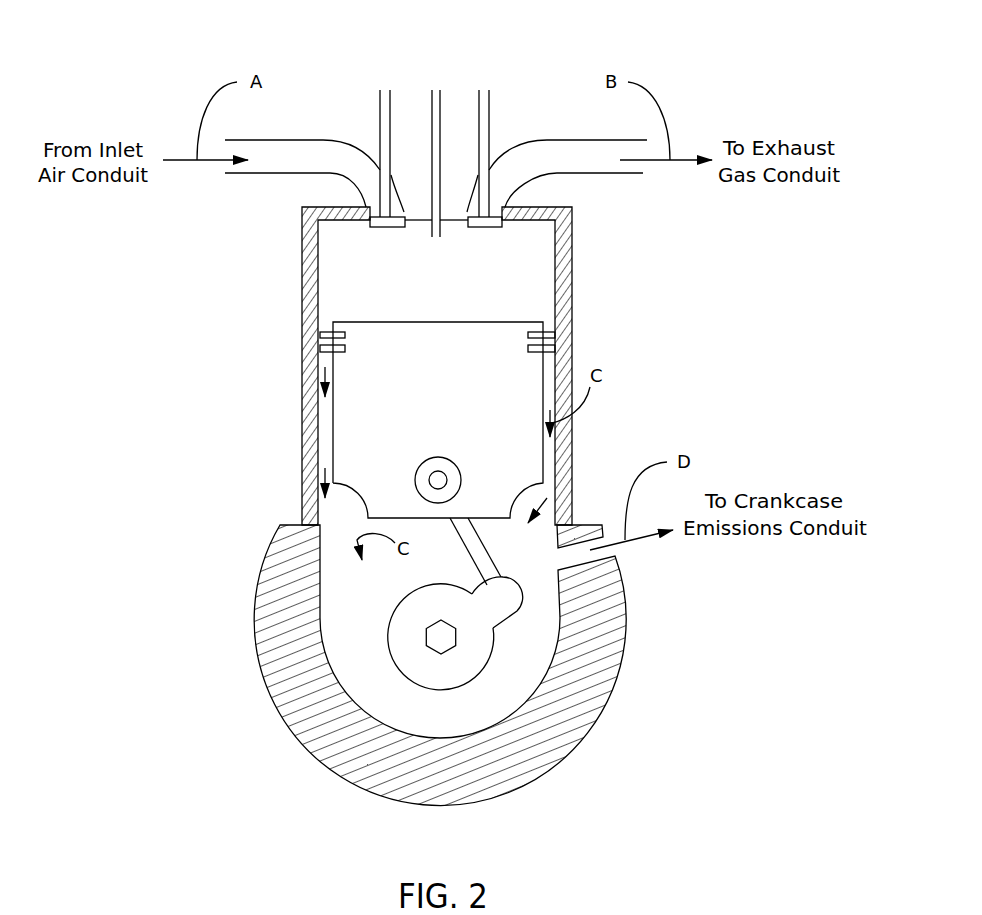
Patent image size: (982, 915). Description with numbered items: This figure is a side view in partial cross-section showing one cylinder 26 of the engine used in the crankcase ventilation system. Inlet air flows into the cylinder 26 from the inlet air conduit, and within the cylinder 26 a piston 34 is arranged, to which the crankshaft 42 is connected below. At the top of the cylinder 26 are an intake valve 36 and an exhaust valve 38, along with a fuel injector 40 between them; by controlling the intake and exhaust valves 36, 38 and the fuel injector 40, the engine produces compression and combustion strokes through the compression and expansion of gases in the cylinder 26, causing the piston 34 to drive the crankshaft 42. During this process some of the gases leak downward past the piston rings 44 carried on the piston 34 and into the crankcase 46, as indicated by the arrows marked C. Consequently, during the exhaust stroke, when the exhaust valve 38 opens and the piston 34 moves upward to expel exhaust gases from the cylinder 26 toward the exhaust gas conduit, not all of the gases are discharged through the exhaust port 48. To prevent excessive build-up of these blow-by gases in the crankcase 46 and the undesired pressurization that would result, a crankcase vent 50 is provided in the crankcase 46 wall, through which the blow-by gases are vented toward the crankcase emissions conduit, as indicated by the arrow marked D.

The cylinder 26 is at (302, 342).
The piston 34 is at (328, 447).
The intake valve 36 is at (380, 117).
The exhaust valve 38 is at (489, 117).
The fuel injector 40 is at (442, 100).
The crankshaft 42 is at (453, 647).
The piston rings 44 is at (548, 325).
The crankcase 46 is at (368, 627).
The exhaust port 48 is at (507, 227).
The crankcase vent 50 is at (617, 550).